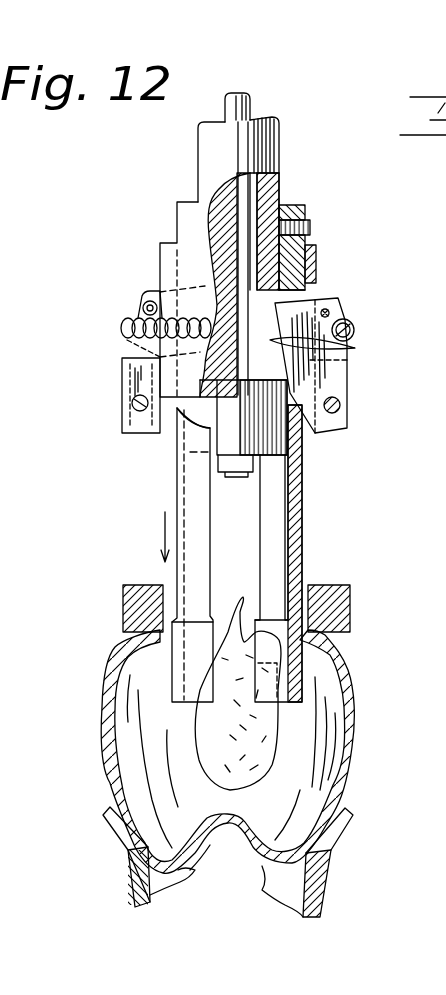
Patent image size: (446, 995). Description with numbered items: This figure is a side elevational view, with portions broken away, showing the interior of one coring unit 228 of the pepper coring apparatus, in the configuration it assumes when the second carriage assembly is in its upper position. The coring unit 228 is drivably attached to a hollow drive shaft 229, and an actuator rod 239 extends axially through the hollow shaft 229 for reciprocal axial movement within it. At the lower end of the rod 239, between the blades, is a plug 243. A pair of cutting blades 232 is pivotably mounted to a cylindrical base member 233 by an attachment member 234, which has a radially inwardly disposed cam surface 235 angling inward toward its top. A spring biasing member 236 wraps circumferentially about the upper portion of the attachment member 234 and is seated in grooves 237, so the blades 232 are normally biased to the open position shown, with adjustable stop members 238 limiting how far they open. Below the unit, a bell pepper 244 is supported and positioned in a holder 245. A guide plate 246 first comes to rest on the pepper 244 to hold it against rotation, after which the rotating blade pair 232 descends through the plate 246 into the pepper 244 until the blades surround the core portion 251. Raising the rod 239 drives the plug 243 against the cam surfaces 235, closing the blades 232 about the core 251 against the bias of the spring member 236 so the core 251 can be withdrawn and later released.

The coring unit 228 is at (328, 251).
The hollow drive shaft 229 is at (280, 152).
The cutting blades 232 is at (190, 493).
The cylindrical base member 233 is at (304, 206).
The attachment member 234 is at (353, 362).
The cam surface 235 is at (160, 357).
The spring biasing member 236 is at (353, 324).
The grooves 237 is at (355, 348).
The adjustable stop members 238 is at (145, 302).
The actuator rod 239 is at (253, 106).
The plug 243 is at (290, 447).
The bell pepper 244 is at (112, 683).
The holder 245 is at (325, 881).
The guide plate 246 is at (336, 599).
The core portion 251 is at (255, 752).